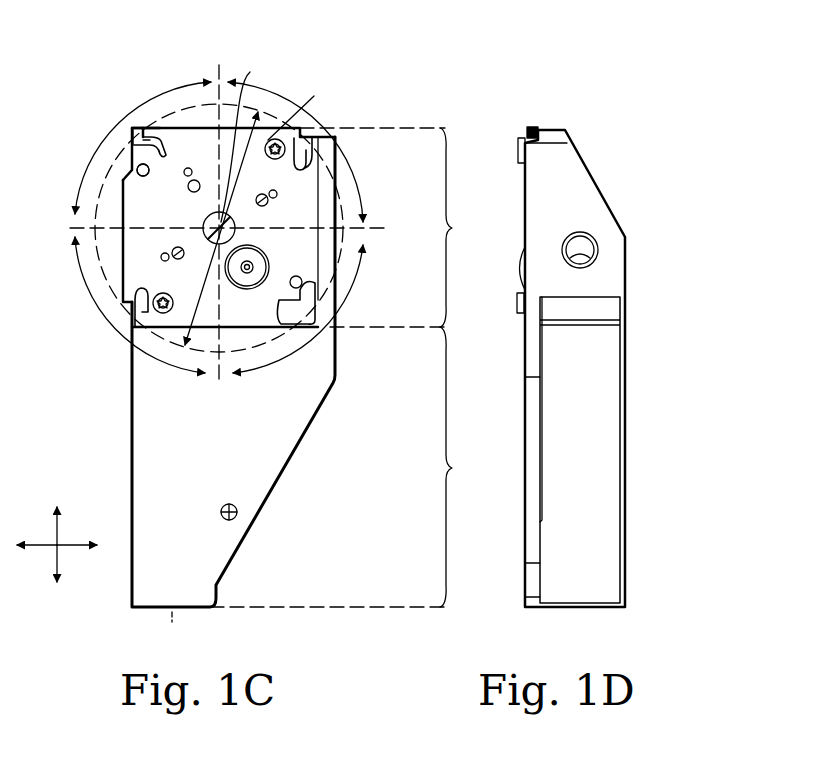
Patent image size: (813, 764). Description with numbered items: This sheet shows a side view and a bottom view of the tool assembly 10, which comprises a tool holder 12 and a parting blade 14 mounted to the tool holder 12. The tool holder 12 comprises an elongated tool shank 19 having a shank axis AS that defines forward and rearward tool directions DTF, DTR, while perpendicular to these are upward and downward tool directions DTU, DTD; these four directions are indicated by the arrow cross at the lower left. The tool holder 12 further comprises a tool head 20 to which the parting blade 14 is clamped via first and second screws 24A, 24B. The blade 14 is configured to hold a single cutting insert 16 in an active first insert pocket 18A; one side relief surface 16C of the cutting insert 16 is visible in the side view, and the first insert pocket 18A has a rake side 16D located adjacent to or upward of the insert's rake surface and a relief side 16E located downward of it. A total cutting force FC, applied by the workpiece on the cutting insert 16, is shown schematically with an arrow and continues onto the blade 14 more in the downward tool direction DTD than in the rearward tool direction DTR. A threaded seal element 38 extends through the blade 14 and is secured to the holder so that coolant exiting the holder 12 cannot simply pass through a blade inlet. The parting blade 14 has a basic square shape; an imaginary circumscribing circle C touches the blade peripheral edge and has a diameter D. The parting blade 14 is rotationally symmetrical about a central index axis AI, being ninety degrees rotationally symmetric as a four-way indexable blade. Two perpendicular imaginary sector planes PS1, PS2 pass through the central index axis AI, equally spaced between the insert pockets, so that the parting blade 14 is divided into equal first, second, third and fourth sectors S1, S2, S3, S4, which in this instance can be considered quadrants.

In FIG. 1C, the tool assembly 10 is at (245, 347).
In FIG. 1D, the tool assembly 10 is at (502, 60).
In FIG. 1C, the tool holder 12 is at (130, 430).
In FIG. 1C, the parting blade 14 is at (120, 205).
In FIG. 1C, the cutting insert 16 is at (127, 138).
In FIG. 1C, the side relief surface 16C is at (151, 140).
In FIG. 1C, the rake side 16D is at (127, 158).
In FIG. 1C, the relief side 16E is at (156, 125).
In FIG. 1C, the first insert pocket 18A is at (160, 184).
In FIG. 1C, the tool shank 19 is at (350, 467).
In FIG. 1C, the tool head 20 is at (459, 227).
In FIG. 1C, the first screw 24A is at (303, 150).
In FIG. 1C, the second screw 24B is at (158, 308).
In FIG. 1C, the threaded seal element 38 is at (250, 272).
In FIG. 1C, the central index axis AI is at (301, 109).
In FIG. 1C, the shank axis AS is at (176, 631).
In FIG. 1C, the imaginary circumscribing circle C is at (73, 211).
In FIG. 1C, the diameter D is at (226, 199).
In FIG. 1C, the total cutting force FC is at (127, 128).
In FIG. 1C, the first imaginary sector plane PS1 is at (220, 214).
In FIG. 1C, the second imaginary sector plane PS2 is at (247, 229).
In FIG. 1C, the first sector S1 is at (143, 141).
In FIG. 1C, the second sector S2 is at (336, 152).
In FIG. 1C, the third sector S3 is at (339, 309).
In FIG. 1C, the fourth sector S4 is at (138, 305).
In FIG. 1C, the forward tool direction DTF is at (36, 521).
In FIG. 1C, the downward tool direction DTD is at (90, 532).
In FIG. 1C, the upward tool direction DTU is at (34, 561).
In FIG. 1C, the rearward tool direction DTR is at (83, 571).